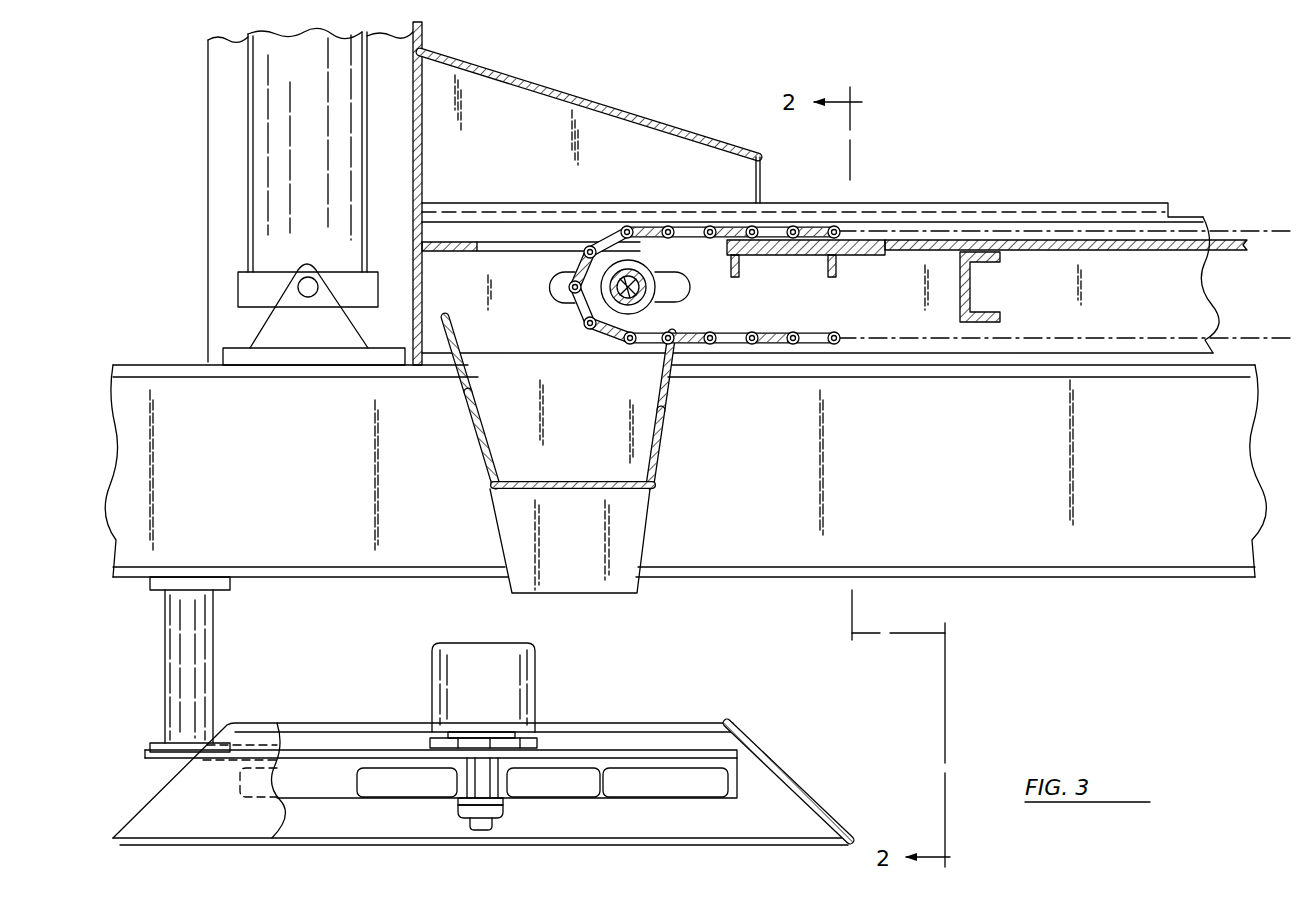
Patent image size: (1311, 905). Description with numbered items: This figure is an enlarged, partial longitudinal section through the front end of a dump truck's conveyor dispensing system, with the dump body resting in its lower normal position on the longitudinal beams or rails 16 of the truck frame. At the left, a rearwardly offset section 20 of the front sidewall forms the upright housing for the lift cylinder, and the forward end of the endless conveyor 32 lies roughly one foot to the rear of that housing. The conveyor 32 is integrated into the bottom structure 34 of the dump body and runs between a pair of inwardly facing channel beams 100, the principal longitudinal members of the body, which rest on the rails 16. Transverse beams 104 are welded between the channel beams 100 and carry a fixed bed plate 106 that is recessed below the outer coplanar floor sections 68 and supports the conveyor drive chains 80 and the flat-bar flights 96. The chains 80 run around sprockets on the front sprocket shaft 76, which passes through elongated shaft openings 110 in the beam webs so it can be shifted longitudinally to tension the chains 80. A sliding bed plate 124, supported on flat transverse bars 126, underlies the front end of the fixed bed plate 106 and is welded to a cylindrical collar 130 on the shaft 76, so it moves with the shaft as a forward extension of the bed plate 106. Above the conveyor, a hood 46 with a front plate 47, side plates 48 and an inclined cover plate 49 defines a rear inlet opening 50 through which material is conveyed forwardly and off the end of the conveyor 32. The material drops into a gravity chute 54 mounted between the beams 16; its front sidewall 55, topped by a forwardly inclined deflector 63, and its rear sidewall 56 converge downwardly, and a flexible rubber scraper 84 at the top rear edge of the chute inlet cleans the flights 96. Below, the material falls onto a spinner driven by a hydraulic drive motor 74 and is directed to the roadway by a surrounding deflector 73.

The longitudinal beams or rails 16 is at (996, 495).
The rearwardly offset section 20 is at (428, 37).
The endless conveyor 32 is at (813, 226).
The bottom structure 34 is at (1190, 283).
The hood 46 is at (515, 112).
The front plate 47 is at (428, 175).
The side plates 48 is at (602, 133).
The cover plate 49 is at (688, 128).
The rear inlet opening 50 is at (762, 180).
The gravity chute 54 is at (518, 505).
The front sidewall 55 is at (481, 451).
The rear sidewall 56 is at (666, 452).
The forwardly inclined flange or deflector 63 is at (455, 316).
The outer coplanar floor sections 68 is at (1098, 203).
The deflector 73 is at (162, 790).
The hydraulic drive motor 74 is at (490, 690).
The front sprocket shaft 76 is at (582, 300).
The conveyor drive chains 80 is at (820, 336).
The flexible rubber scraper 84 is at (660, 372).
The flights 96 is at (735, 227).
The channel beams 100 is at (1158, 307).
The transverse beams 104 is at (972, 288).
The fixed bed plate 106 is at (1210, 240).
The elongated shaft openings 110 is at (555, 284).
The sliding bed plate 124 is at (856, 255).
The flat transverse bars 126 is at (828, 275).
The cylindrical collar 130 is at (652, 313).